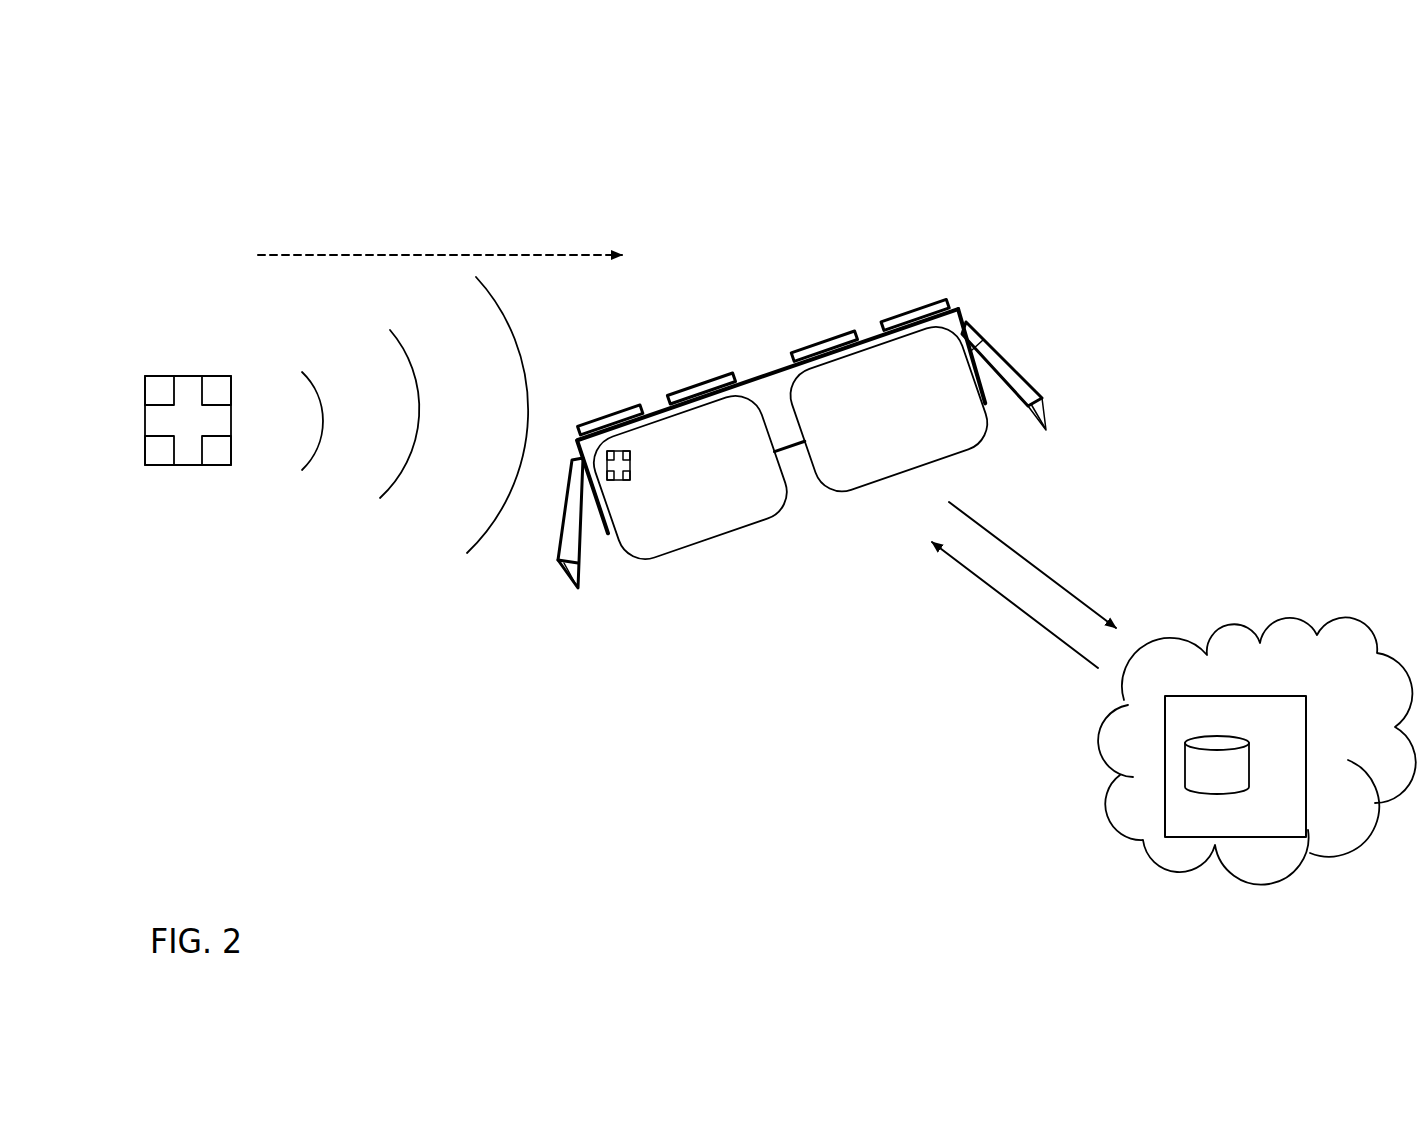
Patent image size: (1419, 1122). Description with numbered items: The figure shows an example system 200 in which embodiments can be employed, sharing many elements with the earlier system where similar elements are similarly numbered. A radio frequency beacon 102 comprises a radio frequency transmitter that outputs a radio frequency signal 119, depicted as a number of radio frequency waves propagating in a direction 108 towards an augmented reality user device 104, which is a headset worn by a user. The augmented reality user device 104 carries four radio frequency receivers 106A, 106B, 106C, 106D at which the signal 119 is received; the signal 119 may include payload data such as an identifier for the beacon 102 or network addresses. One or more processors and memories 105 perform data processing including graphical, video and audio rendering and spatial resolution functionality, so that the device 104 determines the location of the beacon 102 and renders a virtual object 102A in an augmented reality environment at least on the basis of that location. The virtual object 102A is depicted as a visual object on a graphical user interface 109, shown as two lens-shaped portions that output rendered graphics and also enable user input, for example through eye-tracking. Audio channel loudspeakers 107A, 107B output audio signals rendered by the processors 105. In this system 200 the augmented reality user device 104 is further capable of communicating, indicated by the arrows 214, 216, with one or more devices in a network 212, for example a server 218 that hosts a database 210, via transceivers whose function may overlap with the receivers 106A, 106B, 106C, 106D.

The system 200 is at (113, 62).
The direction 108 is at (440, 238).
The radio frequency beacon 102 is at (190, 466).
The radio frequency signal 119 is at (467, 542).
The augmented reality user device 104 is at (1028, 378).
The one or more processors and one or more memories 105 is at (976, 330).
The radio frequency receiver 106A is at (582, 425).
The radio frequency receiver 106B is at (708, 382).
The radio frequency receiver 106C is at (827, 341).
The radio frequency receiver 106D is at (926, 307).
The audio channel loudspeaker 107A is at (570, 588).
The audio channel loudspeaker 107B is at (1040, 424).
The virtual object 102A is at (627, 481).
The graphical user interface 109 is at (837, 486).
The data transmission 214 is at (1032, 561).
The data reception 216 is at (1015, 605).
The network 212 is at (1118, 829).
The server 218 is at (1235, 766).
The database 210 is at (1217, 765).